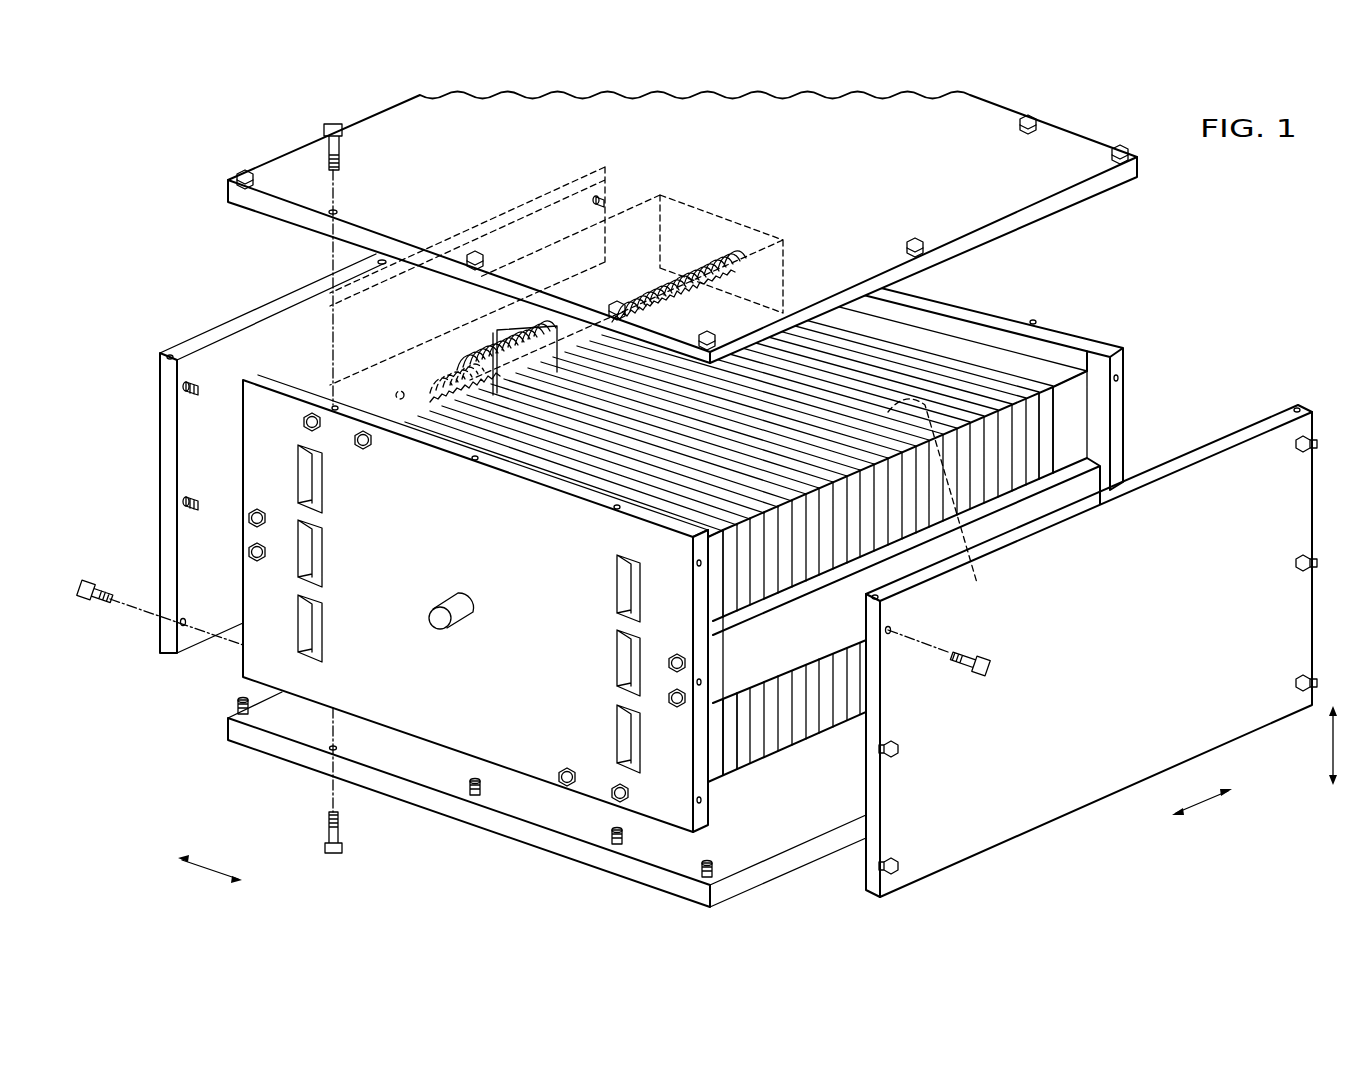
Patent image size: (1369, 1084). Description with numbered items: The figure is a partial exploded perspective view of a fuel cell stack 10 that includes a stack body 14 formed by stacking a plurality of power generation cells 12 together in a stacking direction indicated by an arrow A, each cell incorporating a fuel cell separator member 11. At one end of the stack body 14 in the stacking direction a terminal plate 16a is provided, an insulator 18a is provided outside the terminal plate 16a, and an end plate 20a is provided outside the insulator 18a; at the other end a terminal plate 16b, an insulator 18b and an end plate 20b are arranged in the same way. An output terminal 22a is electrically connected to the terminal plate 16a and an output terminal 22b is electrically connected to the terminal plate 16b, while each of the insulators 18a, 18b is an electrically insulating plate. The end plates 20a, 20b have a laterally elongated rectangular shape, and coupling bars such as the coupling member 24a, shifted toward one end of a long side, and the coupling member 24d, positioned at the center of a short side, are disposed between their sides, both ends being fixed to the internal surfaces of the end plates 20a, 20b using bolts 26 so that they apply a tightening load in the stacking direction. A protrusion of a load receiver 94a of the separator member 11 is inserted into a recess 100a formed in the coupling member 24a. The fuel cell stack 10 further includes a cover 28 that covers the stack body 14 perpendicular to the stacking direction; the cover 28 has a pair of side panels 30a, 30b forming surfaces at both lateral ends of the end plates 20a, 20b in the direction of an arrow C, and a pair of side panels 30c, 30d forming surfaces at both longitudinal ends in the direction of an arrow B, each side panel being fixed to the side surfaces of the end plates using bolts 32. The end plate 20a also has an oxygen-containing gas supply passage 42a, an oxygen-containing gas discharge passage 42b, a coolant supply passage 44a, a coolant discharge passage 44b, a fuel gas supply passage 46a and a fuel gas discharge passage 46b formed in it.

The fuel cell stack 10 is at (1293, 185).
The fuel cell separator member 11 is at (463, 353).
The power generation cell 12 is at (1023, 477).
The stack body 14 is at (788, 547).
The terminal plate 16a is at (733, 768).
The terminal plate 16b is at (1053, 407).
The insulator 18a is at (717, 775).
The insulator 18b is at (1063, 372).
The end plate 20a is at (475, 641).
The end plate 20b is at (1063, 327).
The output terminal 22a is at (437, 629).
The output terminal 22b is at (946, 511).
The coupling member 24a is at (703, 240).
The coupling member 24d is at (1036, 503).
The bolt 26 is at (303, 425).
The cover 28 is at (671, 228).
The side panel 30a is at (246, 198).
The side panel 30b is at (420, 793).
The side panel 30c is at (173, 420).
The side panel 30d is at (990, 838).
The bolt 32 is at (330, 124).
The oxygen-containing gas supply passage 42a is at (318, 480).
The oxygen-containing gas discharge passage 42b is at (620, 741).
The coolant supply passage 44a is at (318, 554).
The coolant discharge passage 44b is at (620, 665).
The fuel gas supply passage 46a is at (620, 591).
The fuel gas discharge passage 46b is at (318, 621).
The load receiver 94a is at (483, 355).
The recess 100a is at (520, 347).